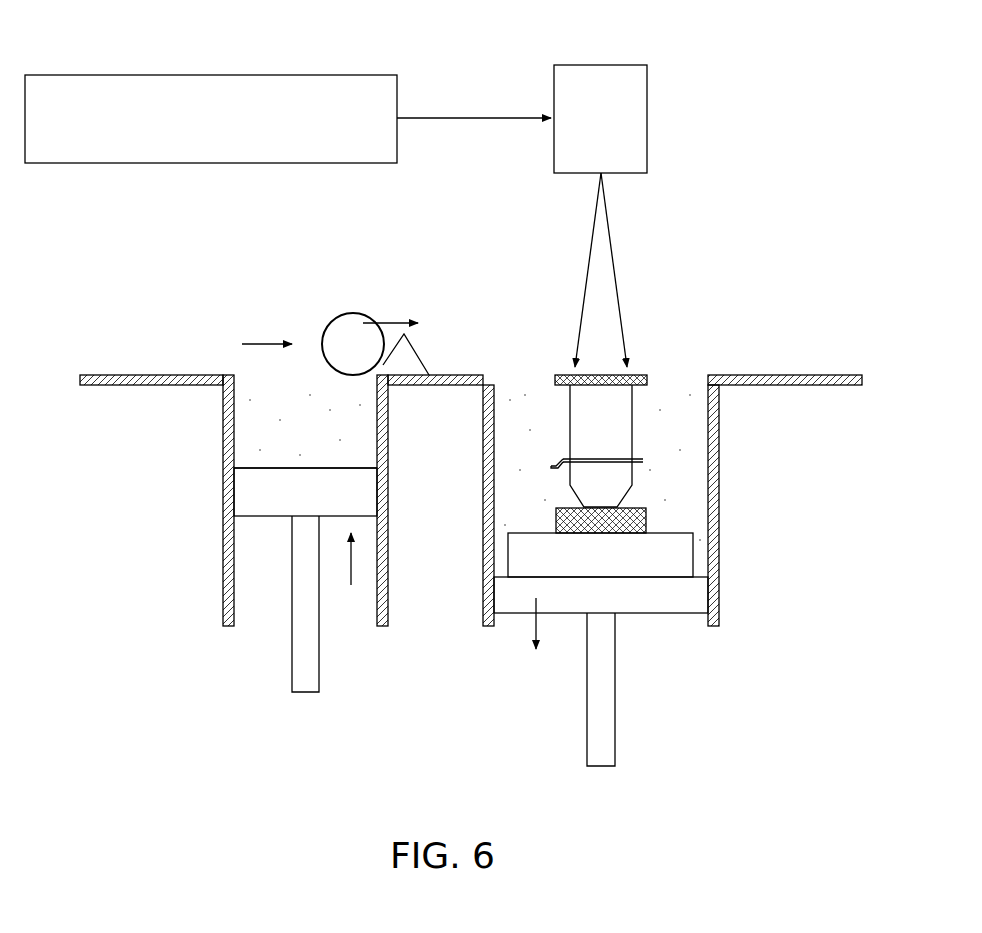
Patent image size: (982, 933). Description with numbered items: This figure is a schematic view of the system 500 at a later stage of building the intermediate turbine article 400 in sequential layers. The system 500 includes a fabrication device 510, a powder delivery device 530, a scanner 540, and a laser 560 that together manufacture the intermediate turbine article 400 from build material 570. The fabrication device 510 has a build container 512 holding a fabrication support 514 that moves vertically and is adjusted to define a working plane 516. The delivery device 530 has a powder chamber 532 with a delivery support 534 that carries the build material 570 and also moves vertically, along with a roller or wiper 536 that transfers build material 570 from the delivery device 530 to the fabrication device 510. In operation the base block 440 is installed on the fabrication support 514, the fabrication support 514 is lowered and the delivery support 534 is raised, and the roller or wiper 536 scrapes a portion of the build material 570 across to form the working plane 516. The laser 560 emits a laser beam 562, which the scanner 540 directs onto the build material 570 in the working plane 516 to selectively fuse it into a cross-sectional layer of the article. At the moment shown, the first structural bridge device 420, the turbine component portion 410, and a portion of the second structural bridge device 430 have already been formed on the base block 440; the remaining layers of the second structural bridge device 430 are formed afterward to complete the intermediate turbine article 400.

The system 500 is at (769, 86).
The fabrication device 510 is at (750, 509).
The build container 512 is at (720, 402).
The fabrication support 514 is at (663, 614).
The working plane 516 is at (688, 372).
The powder delivery device 530 is at (144, 482).
The powder chamber 532 is at (229, 432).
The delivery support 534 is at (246, 497).
The roller or wiper 536 is at (355, 313).
The scanner 540 is at (603, 65).
The laser 560 is at (218, 75).
The laser beam 562 is at (477, 116).
The build material 570 is at (242, 412).
The intermediate turbine article 400 is at (642, 421).
The turbine component portion 410 is at (577, 428).
The first structural bridge device 420 is at (557, 522).
The second structural bridge device 430 is at (640, 375).
The base block 440 is at (518, 557).